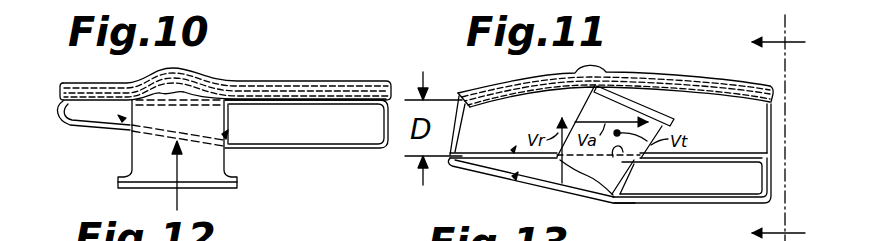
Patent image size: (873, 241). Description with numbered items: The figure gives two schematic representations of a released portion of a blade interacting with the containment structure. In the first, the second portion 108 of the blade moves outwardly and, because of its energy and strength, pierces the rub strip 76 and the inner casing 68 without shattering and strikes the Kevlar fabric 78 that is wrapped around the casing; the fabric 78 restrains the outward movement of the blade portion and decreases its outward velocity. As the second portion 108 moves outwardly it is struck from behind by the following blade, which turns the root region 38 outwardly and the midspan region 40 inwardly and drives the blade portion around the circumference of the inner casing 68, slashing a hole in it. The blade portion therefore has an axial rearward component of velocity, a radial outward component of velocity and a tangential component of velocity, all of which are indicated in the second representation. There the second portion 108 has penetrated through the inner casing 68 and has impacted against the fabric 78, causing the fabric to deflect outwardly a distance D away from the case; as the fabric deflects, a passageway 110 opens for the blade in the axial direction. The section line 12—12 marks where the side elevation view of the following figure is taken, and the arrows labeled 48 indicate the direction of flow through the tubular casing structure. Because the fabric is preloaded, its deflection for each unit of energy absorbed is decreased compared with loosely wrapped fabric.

In FIG. 11, the section line 12— 12 is at (754, 128).
In FIG. 11, the root region 38 is at (612, 116).
In FIG. 11, the midspan region 40 is at (617, 185).
In FIG. 10, the air flow direction 48 is at (258, 153).
In FIG. 11, the air flow direction 48 is at (657, 207).
In FIG. 10, the inner casing 68 is at (306, 124).
In FIG. 10, the rub strip 76 is at (367, 148).
In FIG. 10, the Kevlar fabric 78 is at (252, 84).
In FIG. 11, the Kevlar fabric 78 is at (683, 73).
In FIG. 10, the second portion of the blade 108 is at (143, 152).
In FIG. 11, the second portion of the blade 108 is at (637, 150).
In FIG. 11, the passageway 110 is at (738, 133).